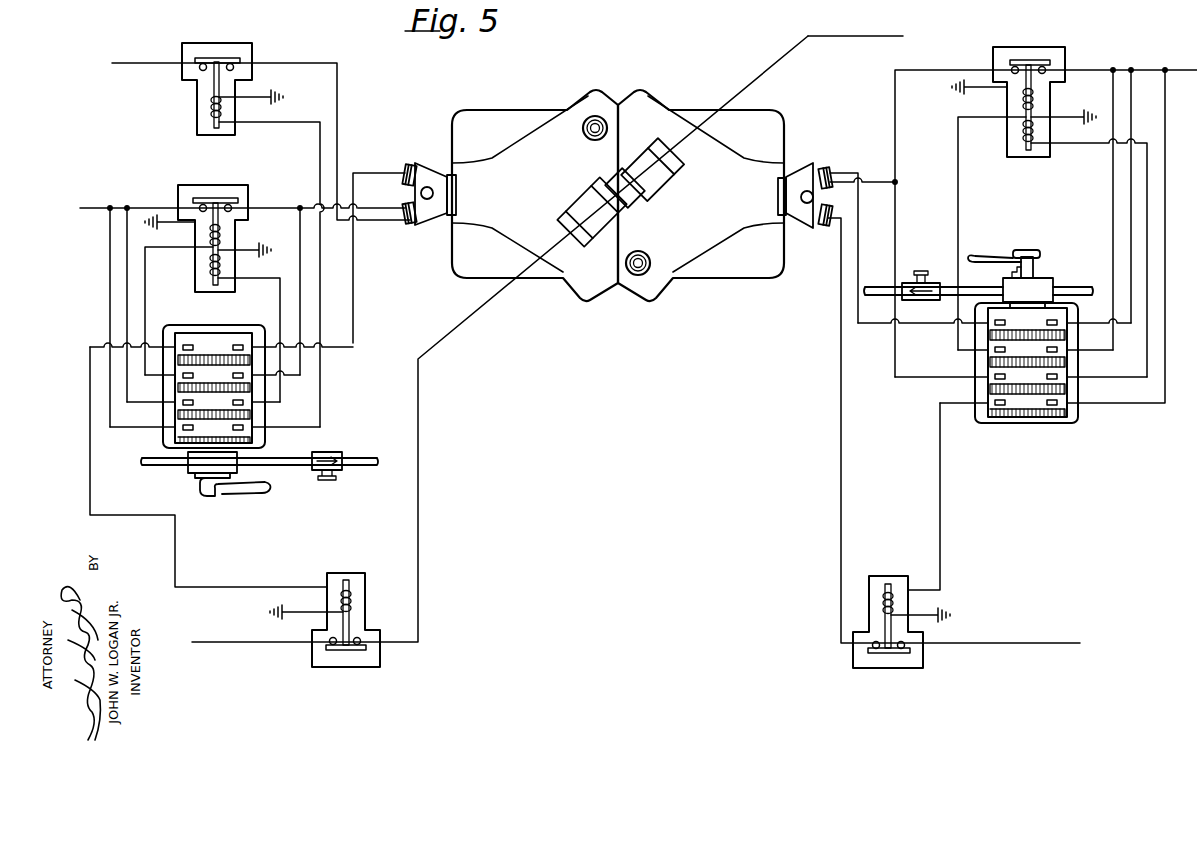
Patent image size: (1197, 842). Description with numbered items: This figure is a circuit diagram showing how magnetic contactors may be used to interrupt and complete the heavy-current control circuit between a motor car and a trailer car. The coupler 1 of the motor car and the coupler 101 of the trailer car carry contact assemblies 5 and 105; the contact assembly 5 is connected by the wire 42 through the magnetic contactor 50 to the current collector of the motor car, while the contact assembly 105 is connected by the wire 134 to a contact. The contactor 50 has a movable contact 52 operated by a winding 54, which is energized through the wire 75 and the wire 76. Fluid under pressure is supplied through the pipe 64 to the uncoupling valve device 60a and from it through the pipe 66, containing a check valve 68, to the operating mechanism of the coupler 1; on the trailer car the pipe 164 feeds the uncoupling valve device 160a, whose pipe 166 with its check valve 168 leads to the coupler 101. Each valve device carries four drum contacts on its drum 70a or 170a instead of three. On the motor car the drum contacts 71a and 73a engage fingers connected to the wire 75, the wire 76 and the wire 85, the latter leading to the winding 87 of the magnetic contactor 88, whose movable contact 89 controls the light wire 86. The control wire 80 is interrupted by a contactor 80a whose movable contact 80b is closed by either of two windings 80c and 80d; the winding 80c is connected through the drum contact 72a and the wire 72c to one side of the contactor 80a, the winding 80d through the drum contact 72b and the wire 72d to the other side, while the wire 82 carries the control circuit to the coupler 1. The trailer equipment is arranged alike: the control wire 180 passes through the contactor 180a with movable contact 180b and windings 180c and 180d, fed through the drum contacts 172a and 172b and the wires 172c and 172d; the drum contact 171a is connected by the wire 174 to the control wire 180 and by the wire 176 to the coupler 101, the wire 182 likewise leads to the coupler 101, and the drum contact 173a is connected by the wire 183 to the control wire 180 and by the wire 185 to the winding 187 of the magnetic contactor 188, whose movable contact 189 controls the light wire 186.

The coupler 1 is at (538, 114).
The coupler 101 is at (704, 116).
The contact assembly 5 is at (577, 198).
The contact assembly 105 is at (666, 189).
The wire 76 is at (378, 172).
The wire 82 is at (381, 208).
The light wire 86 is at (140, 62).
The wire 176 is at (847, 168).
The wire 182 is at (883, 180).
The light wire 186 is at (840, 275).
The wire 134 is at (811, 42).
The wire 42 is at (419, 372).
The magnetic contactor 88 is at (205, 43).
The movable contact 89 is at (222, 58).
The winding 87 is at (212, 101).
The wire 85 is at (275, 124).
The control wire 80 is at (108, 190).
The contactor 80a is at (200, 170).
The movable contact 80b is at (213, 198).
The winding 80c is at (222, 234).
The winding 80d is at (210, 266).
The wire 72c is at (298, 262).
The wire 72d is at (126, 300).
The uncoupling valve device 60a is at (222, 319).
The solenoid body 70a is at (178, 333).
The drum contact 71a is at (202, 345).
The drum contact 72a is at (205, 378).
The drum contact 72b is at (205, 405).
The drum contact 73a is at (208, 430).
The wire 75 is at (89, 378).
The pipe 64 is at (176, 466).
The pipe 66 is at (279, 464).
The check valve 68 is at (340, 470).
The magnetic contactor 50 is at (354, 680).
The movable contact 52 is at (338, 652).
The winding 54 is at (352, 598).
The control wire 180 is at (1152, 70).
The contactor 180a is at (1037, 47).
The movable contact 180b is at (1020, 60).
The winding 180c is at (1038, 102).
The winding 180d is at (1023, 128).
The wire 174 is at (1130, 184).
The wire 172c is at (1112, 217).
The pipe 166 is at (963, 294).
The pipe 164 is at (1082, 288).
The check valve 168 is at (940, 283).
The uncoupling valve device 160a is at (1040, 290).
The solenoid body 170a is at (1018, 420).
The drum contact 171a is at (1010, 326).
The drum contact 172a is at (1043, 352).
The drum contact 172b is at (1043, 380).
The wire 172d is at (916, 380).
The drum contact 173a is at (1065, 420).
The wire 183 is at (1110, 404).
The wire 185 is at (939, 456).
The magnetic contactor 188 is at (880, 677).
The movable contact 189 is at (898, 655).
The winding 187 is at (884, 597).